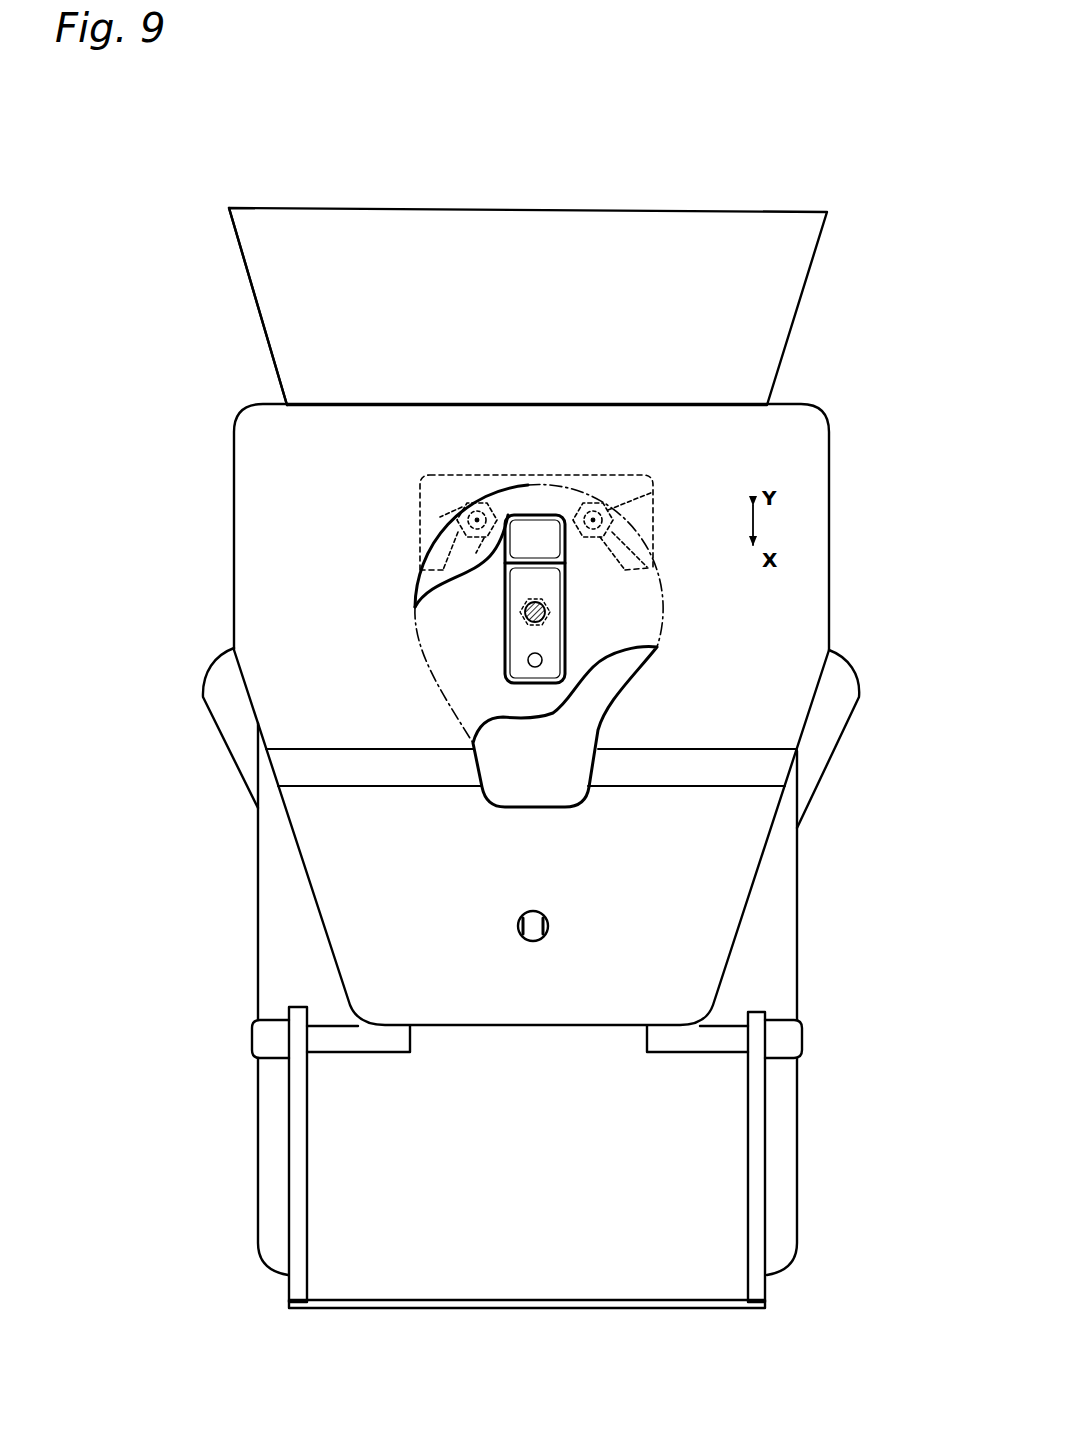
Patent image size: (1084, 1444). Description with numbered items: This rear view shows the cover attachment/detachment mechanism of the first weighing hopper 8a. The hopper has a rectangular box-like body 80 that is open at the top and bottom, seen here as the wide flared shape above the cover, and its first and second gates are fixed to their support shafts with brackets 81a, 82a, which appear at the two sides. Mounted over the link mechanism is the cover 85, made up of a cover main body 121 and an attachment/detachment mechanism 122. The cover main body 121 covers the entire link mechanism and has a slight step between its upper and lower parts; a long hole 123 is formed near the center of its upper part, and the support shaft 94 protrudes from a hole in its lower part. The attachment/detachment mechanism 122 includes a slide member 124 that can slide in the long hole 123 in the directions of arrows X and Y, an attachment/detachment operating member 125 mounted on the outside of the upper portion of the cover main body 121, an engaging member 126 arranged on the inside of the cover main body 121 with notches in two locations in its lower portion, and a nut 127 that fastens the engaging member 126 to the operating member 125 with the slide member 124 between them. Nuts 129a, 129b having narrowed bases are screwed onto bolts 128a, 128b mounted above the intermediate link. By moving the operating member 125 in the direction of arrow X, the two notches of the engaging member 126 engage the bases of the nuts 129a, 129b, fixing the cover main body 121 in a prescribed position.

The first weighing hopper 8a is at (263, 338).
The box-like body 80 is at (758, 350).
The cover 85 is at (360, 390).
The bracket 81a is at (835, 707).
The bracket 82a is at (228, 688).
The cover main body 121 is at (367, 912).
The attachment/detachment mechanism 122 is at (403, 678).
The long hole 123 is at (548, 552).
The slide member 124 is at (517, 595).
The attachment/detachment operating member 125 is at (520, 770).
The engaging member 126 is at (433, 507).
The nut 127 is at (546, 620).
The bolt 128a is at (610, 508).
The bolt 128b is at (481, 503).
The nut 129a is at (612, 527).
The nut 129b is at (460, 529).
The support shaft 94 is at (537, 933).